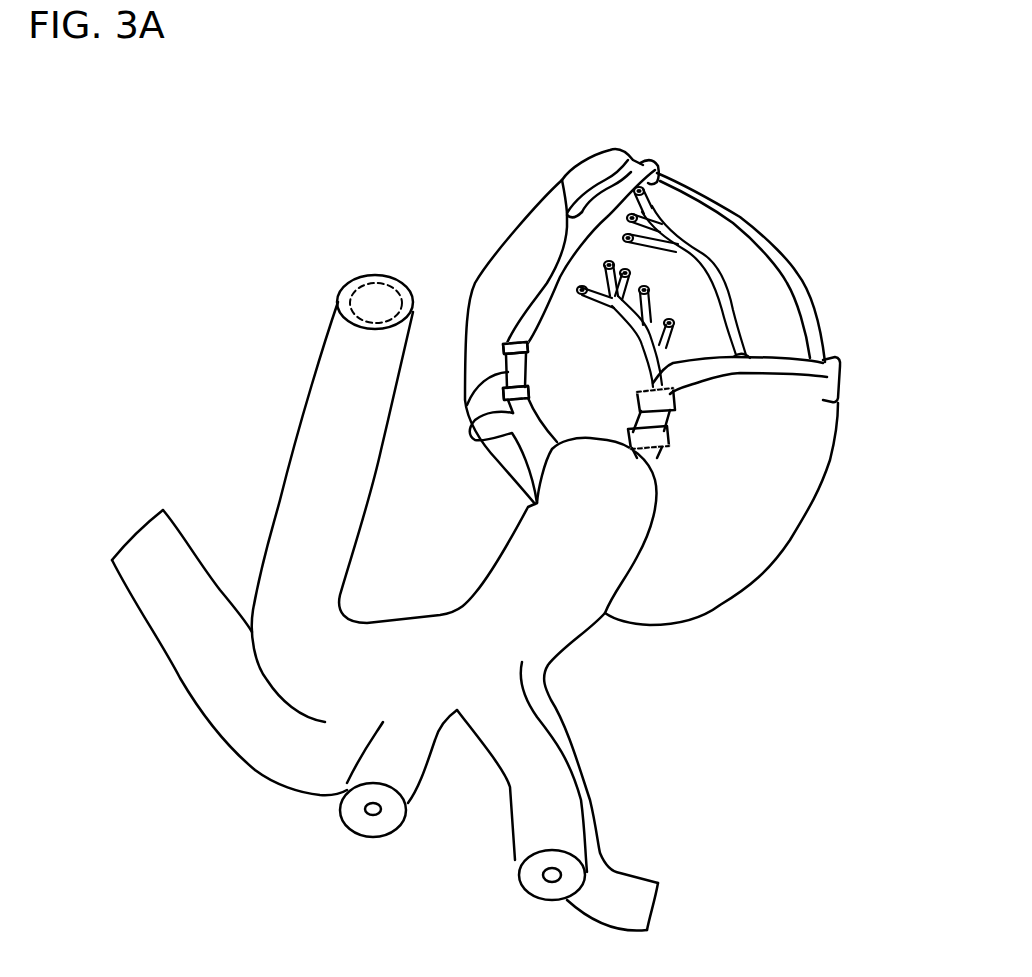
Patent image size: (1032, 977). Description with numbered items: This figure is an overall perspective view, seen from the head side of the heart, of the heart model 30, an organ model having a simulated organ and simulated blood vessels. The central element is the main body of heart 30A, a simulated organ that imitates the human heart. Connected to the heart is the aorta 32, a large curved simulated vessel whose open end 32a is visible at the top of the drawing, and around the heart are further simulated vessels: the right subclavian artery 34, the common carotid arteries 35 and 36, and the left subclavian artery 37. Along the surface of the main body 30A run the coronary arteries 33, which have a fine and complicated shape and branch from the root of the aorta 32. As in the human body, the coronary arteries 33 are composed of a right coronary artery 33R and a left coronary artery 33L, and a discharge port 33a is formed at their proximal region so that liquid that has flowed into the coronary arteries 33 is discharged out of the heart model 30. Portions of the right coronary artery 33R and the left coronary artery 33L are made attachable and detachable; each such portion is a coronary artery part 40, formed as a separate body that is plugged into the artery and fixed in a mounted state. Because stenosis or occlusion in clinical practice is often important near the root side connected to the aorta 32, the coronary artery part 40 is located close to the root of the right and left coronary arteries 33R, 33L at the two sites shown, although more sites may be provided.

The heart model 30 is at (353, 148).
The main body of heart 30A is at (769, 536).
The aorta 32 is at (318, 428).
The open end of aorta 32a is at (375, 300).
The coronary arteries 33 is at (679, 317).
The left coronary artery 33L is at (547, 285).
The right coronary artery 33R is at (698, 373).
The discharge port 33a is at (657, 181).
The right subclavian artery 34 is at (637, 893).
The common carotid artery 35 is at (528, 827).
The common carotid artery 36 is at (413, 771).
The left subclavian artery 37 is at (153, 540).
The coronary artery part 40 is at (467, 405).